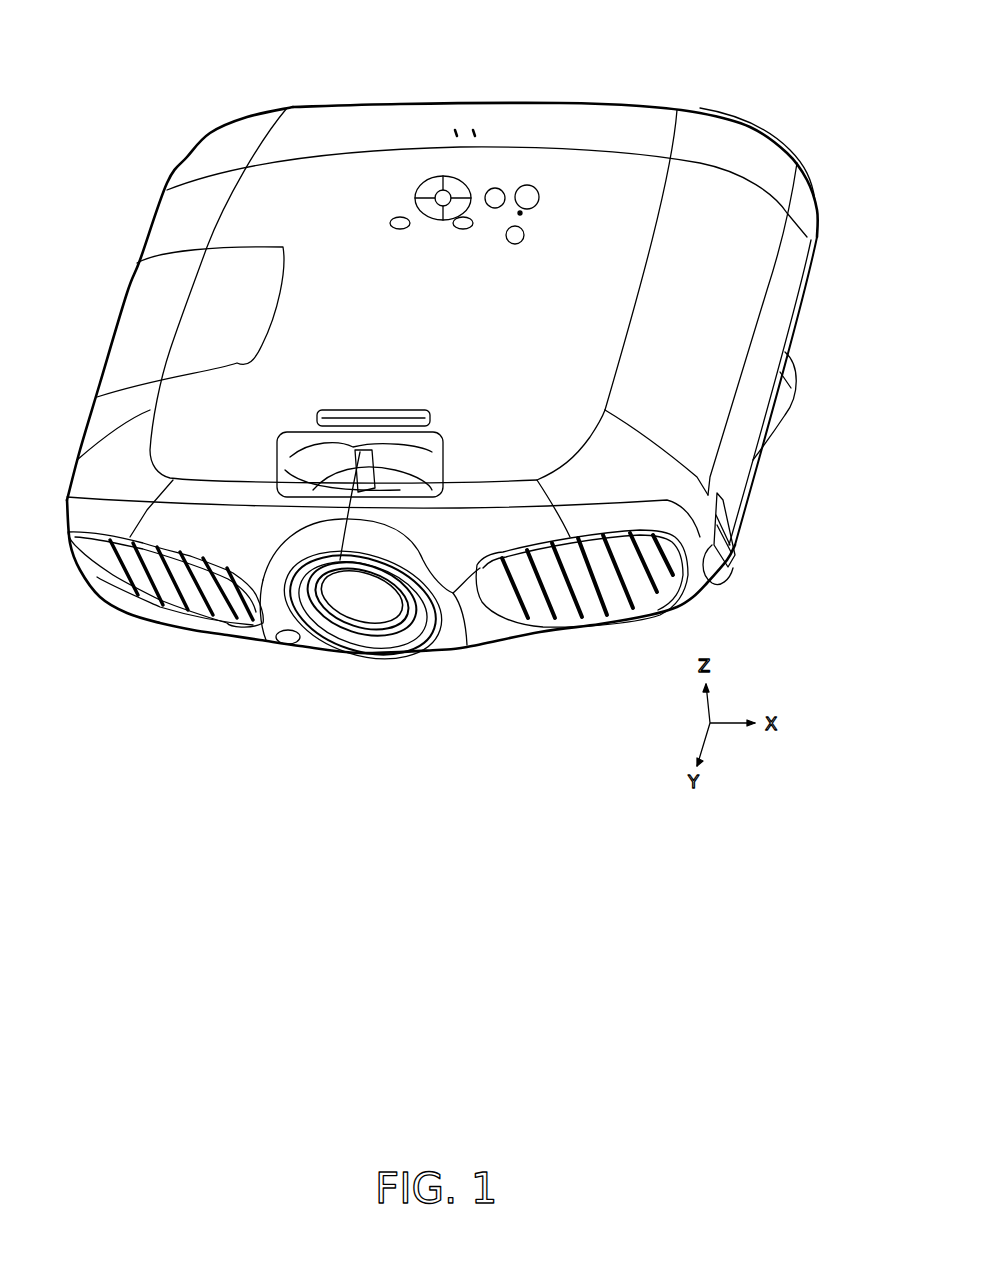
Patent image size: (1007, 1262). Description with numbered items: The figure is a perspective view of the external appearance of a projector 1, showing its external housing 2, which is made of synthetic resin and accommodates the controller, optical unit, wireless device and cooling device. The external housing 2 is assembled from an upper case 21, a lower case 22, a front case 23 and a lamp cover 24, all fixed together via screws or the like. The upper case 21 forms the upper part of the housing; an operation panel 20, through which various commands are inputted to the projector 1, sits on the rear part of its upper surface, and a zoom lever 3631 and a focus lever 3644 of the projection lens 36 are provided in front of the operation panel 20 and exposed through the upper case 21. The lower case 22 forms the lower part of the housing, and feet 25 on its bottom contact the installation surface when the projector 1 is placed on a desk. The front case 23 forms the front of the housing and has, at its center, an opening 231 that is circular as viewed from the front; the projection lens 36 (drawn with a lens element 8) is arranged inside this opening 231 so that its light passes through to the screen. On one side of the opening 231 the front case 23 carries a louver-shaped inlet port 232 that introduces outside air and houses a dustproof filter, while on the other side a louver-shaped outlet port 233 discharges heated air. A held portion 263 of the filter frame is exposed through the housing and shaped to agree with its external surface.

The projector 1 is at (735, 65).
The external housing 2 is at (455, 378).
The projection lens 8 is at (405, 638).
The operation panel 20 is at (482, 238).
The upper case 21 is at (733, 463).
The lower case 22 is at (745, 500).
The front case 23 is at (436, 522).
The lamp cover 24 is at (150, 305).
The feet 25 is at (723, 580).
The projection lens 36 is at (333, 643).
The opening 231 is at (373, 657).
The inlet port 232 is at (570, 633).
The outlet port 233 is at (212, 612).
The held portion 263 is at (713, 535).
The zoom lever 3631 is at (353, 447).
The focus lever 3644 is at (343, 462).